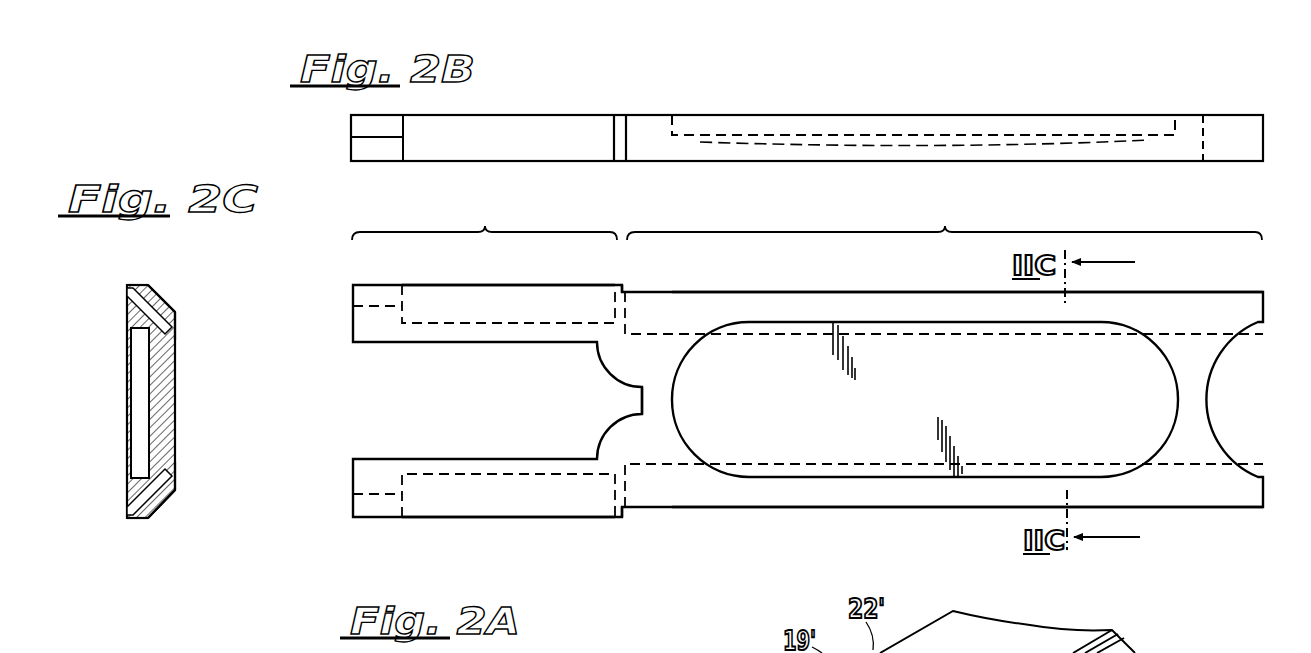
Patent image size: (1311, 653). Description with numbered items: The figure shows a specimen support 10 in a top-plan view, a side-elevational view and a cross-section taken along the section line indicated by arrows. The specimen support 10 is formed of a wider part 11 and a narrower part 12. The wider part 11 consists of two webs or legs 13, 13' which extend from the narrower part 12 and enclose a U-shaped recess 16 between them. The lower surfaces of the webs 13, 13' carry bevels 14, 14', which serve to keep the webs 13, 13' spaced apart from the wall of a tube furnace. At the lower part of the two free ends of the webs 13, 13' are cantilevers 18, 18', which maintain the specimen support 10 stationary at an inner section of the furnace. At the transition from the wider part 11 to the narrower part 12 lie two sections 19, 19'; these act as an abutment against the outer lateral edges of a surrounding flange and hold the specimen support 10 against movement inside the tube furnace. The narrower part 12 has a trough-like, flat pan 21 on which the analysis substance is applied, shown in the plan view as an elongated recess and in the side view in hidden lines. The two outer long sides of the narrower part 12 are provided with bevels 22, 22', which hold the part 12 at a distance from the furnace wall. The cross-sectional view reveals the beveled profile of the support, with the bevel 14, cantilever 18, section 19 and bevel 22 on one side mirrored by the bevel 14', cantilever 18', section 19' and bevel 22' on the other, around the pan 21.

In FIG. 2B, the specimen support 10 is at (1102, 104).
In FIG. 2A, the specimen support 10 is at (764, 518).
In FIG. 2C, the specimen support 10 is at (178, 396).
In FIG. 2A, the wider part 11 is at (484, 215).
In FIG. 2A, the narrower part 12 is at (944, 215).
In FIG. 2A, the web 13 is at (508, 282).
In FIG. 2B, the web 13' is at (508, 84).
In FIG. 2A, the web 13' is at (508, 521).
In FIG. 2A, the bevel 14 is at (508, 271).
In FIG. 2C, the bevel 14 is at (130, 266).
In FIG. 2B, the bevel 14' is at (508, 107).
In FIG. 2A, the bevel 14' is at (508, 535).
In FIG. 2C, the bevel 14' is at (129, 548).
In FIG. 2A, the U-shaped recess 16 is at (505, 416).
In FIG. 2A, the cantilever 18 is at (377, 273).
In FIG. 2C, the cantilever 18 is at (154, 284).
In FIG. 2B, the cantilever 18' is at (380, 164).
In FIG. 2A, the cantilever 18' is at (372, 531).
In FIG. 2C, the cantilever 18' is at (154, 525).
In FIG. 2A, the section 19 is at (942, 287).
In FIG. 2C, the section 19 is at (182, 282).
In FIG. 2B, the section 19' is at (648, 107).
In FIG. 2A, the section 19' is at (942, 516).
In FIG. 2C, the section 19' is at (187, 525).
In FIG. 2B, the flat pan 21 is at (913, 126).
In FIG. 2A, the flat pan 21 is at (906, 414).
In FIG. 2C, the flat pan 21 is at (135, 412).
In FIG. 2A, the bevel 22 is at (967, 275).
In FIG. 2C, the bevel 22 is at (199, 315).
In FIG. 2B, the bevel 22' is at (1181, 163).
In FIG. 2A, the bevel 22' is at (967, 534).
In FIG. 2C, the bevel 22' is at (206, 494).